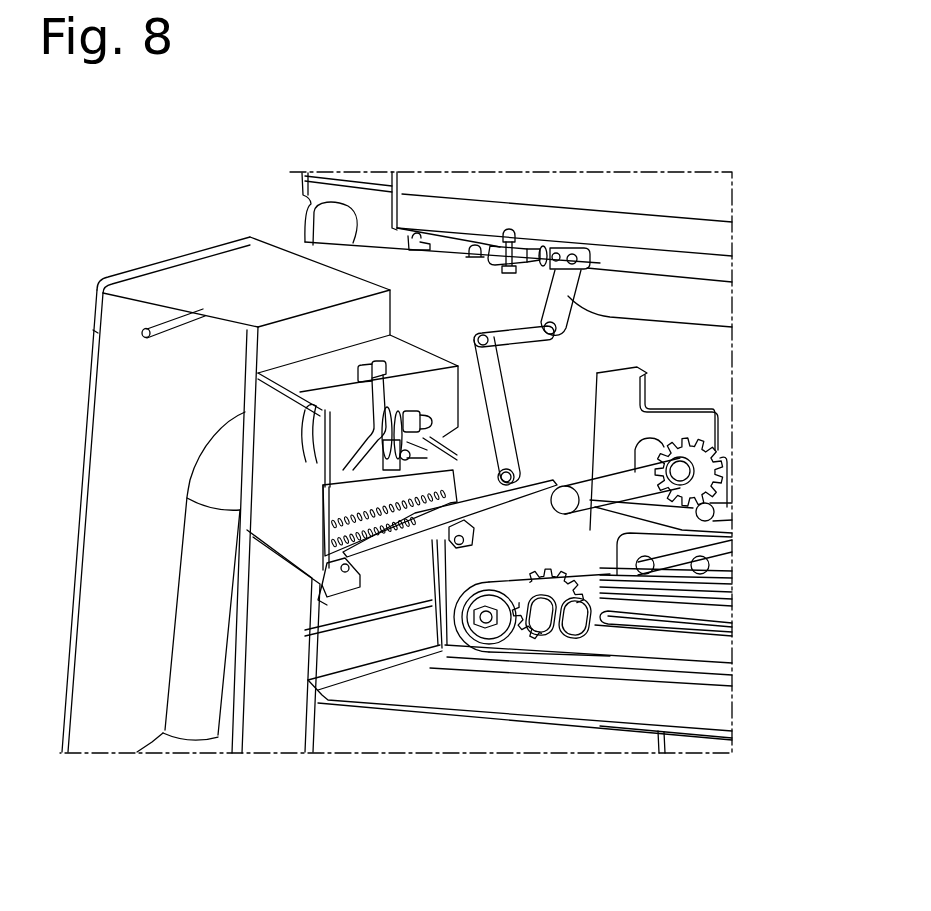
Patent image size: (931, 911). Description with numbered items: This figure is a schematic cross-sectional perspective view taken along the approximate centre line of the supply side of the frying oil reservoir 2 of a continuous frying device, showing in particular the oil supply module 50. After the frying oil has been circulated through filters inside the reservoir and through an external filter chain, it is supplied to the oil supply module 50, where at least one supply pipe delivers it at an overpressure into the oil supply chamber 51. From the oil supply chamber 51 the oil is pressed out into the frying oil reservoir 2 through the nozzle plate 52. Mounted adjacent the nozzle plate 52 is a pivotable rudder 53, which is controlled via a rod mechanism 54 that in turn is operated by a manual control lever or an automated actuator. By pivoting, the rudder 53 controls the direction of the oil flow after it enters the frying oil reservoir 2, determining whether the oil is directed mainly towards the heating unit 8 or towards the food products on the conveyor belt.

The frying oil reservoir 2 is at (585, 693).
The heating unit 8 is at (667, 648).
The oil supply module 50 is at (210, 538).
The oil supply chamber 51 is at (273, 415).
The nozzle plate 52 is at (335, 548).
The pivotable rudder 53 is at (427, 530).
The rod mechanism 54 is at (490, 386).